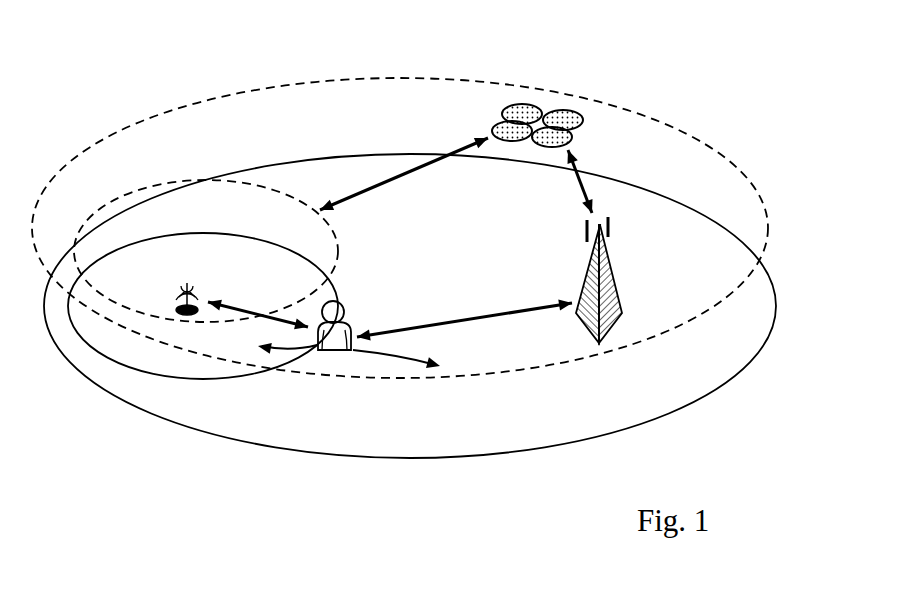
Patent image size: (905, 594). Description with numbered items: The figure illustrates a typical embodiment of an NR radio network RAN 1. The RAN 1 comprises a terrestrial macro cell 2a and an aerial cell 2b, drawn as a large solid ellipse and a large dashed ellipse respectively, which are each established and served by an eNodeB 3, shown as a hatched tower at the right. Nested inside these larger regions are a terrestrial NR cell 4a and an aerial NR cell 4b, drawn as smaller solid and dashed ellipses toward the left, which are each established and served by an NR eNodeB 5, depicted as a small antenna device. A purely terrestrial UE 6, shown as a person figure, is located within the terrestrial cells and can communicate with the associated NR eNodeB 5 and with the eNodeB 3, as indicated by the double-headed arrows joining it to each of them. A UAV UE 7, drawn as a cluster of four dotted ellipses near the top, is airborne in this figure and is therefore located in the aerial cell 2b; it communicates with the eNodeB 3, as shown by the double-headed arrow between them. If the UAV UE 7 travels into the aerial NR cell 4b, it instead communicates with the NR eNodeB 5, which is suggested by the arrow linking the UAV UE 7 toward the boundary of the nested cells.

The RAN 1 is at (598, 70).
The terrestrial macro cell 2a is at (397, 155).
The aerial cell 2b is at (297, 79).
The eNodeB 3 is at (608, 260).
The terrestrial NR cell 4a is at (202, 382).
The aerial NR cell 4b is at (163, 181).
The NR eNodeB 5 is at (202, 283).
The terrestrial UE 6 is at (340, 300).
The UAV UE 7 is at (578, 125).